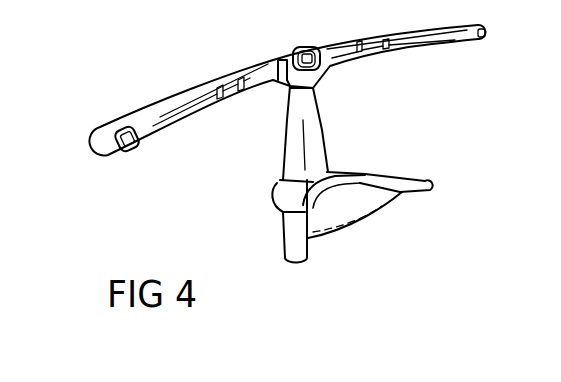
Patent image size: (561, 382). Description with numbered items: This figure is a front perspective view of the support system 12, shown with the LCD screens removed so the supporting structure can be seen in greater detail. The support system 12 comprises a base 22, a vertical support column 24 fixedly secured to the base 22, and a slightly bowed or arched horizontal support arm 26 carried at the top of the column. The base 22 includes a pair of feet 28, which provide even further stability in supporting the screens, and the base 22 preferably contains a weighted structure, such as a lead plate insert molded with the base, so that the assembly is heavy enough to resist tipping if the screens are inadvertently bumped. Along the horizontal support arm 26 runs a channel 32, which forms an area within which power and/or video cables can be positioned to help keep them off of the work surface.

The support system 12 is at (282, 142).
The base 22 is at (378, 218).
The vertical support column 24 is at (288, 132).
The horizontal support arm 26 is at (243, 62).
The feet 28 is at (428, 178).
The channel 32 is at (143, 110).